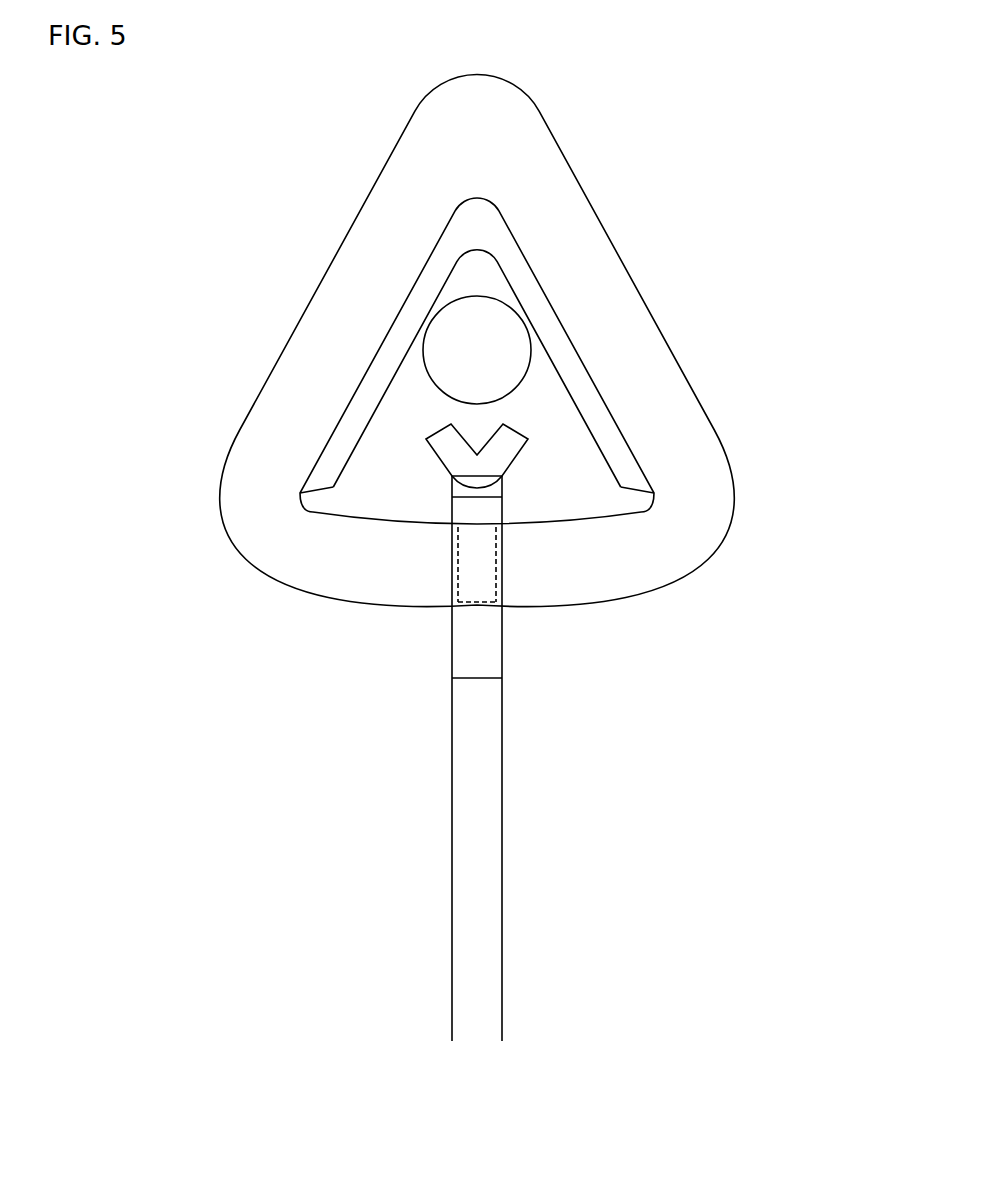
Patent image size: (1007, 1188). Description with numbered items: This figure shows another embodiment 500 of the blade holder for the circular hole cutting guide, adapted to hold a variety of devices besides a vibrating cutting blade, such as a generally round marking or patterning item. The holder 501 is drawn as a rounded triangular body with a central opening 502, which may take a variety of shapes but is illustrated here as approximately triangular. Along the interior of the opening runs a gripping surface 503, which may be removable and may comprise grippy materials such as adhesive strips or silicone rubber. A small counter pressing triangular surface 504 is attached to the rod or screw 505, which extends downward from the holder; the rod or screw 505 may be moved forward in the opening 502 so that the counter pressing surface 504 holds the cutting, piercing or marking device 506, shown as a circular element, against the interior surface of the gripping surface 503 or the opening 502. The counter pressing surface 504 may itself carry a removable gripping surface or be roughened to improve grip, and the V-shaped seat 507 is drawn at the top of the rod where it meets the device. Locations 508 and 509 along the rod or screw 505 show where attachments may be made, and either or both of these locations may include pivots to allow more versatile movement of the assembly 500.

The blade holder embodiment 500 is at (650, 124).
The holder 501 is at (590, 273).
The central opening 502 is at (418, 397).
The gripping surface 503 is at (562, 348).
The counter pressing triangular surface 504 is at (500, 457).
The rod or screw 505 is at (501, 740).
The cutting, piercing or marking device 506 is at (518, 367).
The V-shaped notch 507 is at (447, 432).
The attachment location 508 is at (465, 500).
The attachment location 509 is at (442, 678).